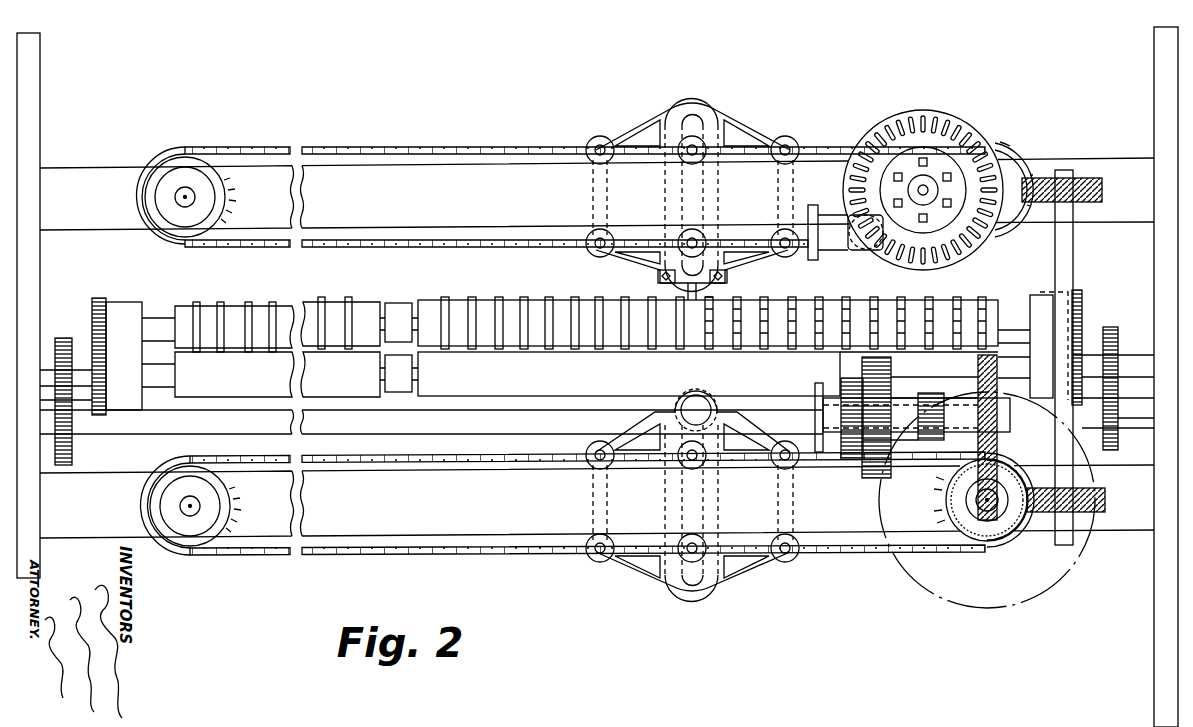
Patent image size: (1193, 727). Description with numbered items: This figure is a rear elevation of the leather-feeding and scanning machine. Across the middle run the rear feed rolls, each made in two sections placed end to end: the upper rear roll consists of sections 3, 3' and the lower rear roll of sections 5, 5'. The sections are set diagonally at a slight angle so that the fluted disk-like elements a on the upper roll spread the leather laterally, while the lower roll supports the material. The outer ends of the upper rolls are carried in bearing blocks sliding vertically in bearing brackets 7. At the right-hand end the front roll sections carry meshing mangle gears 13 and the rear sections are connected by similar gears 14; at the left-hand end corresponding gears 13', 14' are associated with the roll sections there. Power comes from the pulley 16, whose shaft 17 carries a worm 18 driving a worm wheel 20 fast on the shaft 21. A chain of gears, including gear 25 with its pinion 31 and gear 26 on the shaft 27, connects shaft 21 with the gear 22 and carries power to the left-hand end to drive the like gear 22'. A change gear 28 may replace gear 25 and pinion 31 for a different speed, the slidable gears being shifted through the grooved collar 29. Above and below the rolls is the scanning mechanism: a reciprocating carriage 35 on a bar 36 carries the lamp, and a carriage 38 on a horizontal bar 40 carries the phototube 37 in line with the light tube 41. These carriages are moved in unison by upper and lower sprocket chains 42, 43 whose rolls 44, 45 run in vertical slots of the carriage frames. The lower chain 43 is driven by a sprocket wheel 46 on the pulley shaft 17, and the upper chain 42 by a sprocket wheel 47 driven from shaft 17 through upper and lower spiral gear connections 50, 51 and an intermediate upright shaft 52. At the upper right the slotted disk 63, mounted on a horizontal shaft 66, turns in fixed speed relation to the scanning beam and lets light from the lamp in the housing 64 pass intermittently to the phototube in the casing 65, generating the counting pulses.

The upper rear roll section 3 is at (665, 312).
The upper rear roll section 3' is at (234, 315).
The lower rear roll section 5 is at (570, 390).
The lower rear roll section 5' is at (234, 392).
The bearing bracket 7 is at (133, 304).
The fluted disk-like element a is at (219, 294).
The mangle gear 13 is at (1089, 333).
The mangle gear 13' is at (93, 345).
The gear 14 is at (1113, 391).
The gear 14' is at (143, 357).
The pulley 16 is at (928, 598).
The pulley shaft 17 is at (985, 506).
The worm 18 is at (998, 518).
The worm wheel 20 is at (976, 374).
The shaft 21 is at (902, 402).
The gear 22 is at (1112, 372).
The gear 22' is at (66, 390).
The gear 25 is at (862, 364).
The gear 26 is at (1118, 424).
The shaft 27 is at (566, 404).
The change gear 28 is at (850, 460).
The grooved collar 29 is at (816, 396).
The pinion 31 is at (930, 452).
The reciprocating carriage 35 is at (620, 138).
The bar 36 is at (437, 170).
The phototube 37 is at (702, 398).
The carriage 38 is at (660, 570).
The horizontal bar 40 is at (523, 528).
The light tube 41 is at (696, 290).
The upper sprocket chain 42 is at (522, 160).
The lower sprocket chain 43 is at (570, 550).
The roll 44 is at (698, 140).
The roll 45 is at (704, 462).
The sprocket wheel 46 is at (944, 507).
The sprocket wheel 47 is at (1020, 164).
The upper spiral gear connection 50 is at (1020, 182).
The lower spiral gear connection 51 is at (1043, 512).
The upright shaft 52 is at (1072, 250).
The slotted disk 63 is at (916, 110).
The lamp housing 64 is at (864, 250).
The phototube casing 65 is at (820, 254).
The horizontal shaft 66 is at (924, 186).